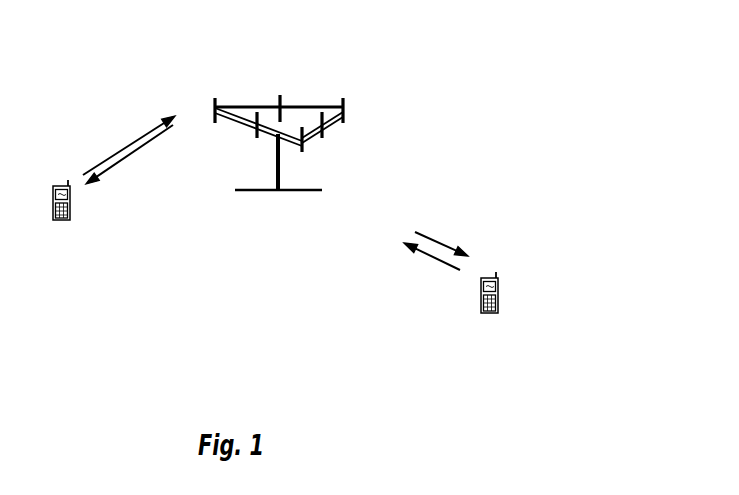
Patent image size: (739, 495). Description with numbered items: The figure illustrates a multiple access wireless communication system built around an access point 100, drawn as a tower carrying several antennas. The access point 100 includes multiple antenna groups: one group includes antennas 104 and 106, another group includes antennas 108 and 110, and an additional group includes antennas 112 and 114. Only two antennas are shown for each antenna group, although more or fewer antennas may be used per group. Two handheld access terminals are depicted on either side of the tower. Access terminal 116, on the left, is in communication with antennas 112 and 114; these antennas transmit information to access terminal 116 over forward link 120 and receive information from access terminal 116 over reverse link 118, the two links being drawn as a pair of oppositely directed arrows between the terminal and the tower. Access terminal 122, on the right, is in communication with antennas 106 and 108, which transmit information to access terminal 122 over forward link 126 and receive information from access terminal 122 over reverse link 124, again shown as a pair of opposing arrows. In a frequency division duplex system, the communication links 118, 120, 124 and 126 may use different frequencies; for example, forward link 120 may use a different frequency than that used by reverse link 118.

The access point 100 is at (263, 190).
The antenna 104 is at (302, 150).
The antenna 106 is at (323, 133).
The antenna 108 is at (345, 121).
The antenna 110 is at (282, 99).
The antenna 112 is at (215, 107).
The antenna 114 is at (257, 138).
The access terminal 116 is at (58, 182).
The reverse link 118 is at (128, 142).
The forward link 120 is at (146, 155).
The access terminal 122 is at (492, 272).
The reverse link 124 is at (423, 252).
The forward link 126 is at (444, 244).